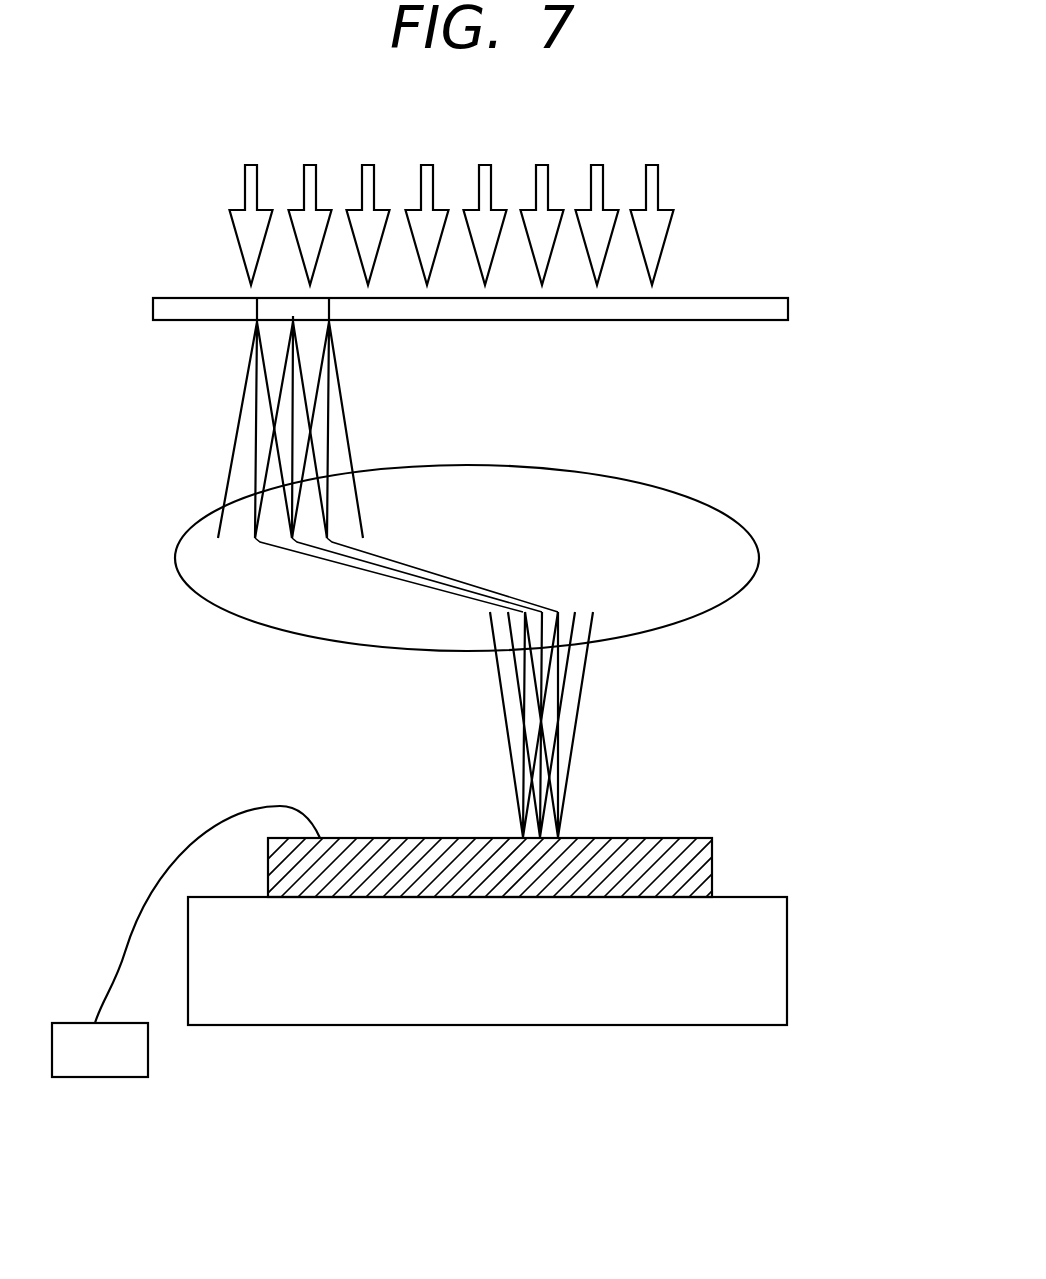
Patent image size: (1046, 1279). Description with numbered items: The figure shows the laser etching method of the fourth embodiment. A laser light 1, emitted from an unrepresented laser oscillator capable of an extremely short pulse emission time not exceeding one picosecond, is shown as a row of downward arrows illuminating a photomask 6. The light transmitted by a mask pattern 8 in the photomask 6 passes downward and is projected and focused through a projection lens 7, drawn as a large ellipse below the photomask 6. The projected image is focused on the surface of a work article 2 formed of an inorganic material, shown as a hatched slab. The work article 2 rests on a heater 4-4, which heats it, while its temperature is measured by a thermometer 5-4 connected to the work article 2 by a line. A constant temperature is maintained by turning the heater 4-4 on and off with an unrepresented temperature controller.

The laser light 1 is at (659, 180).
The photomask 6 is at (735, 321).
The mask pattern 8 is at (276, 298).
The projection lens 7 is at (738, 547).
The work article 2 is at (713, 868).
The heater 4-4 is at (695, 1010).
The thermometer 5-4 is at (108, 1067).